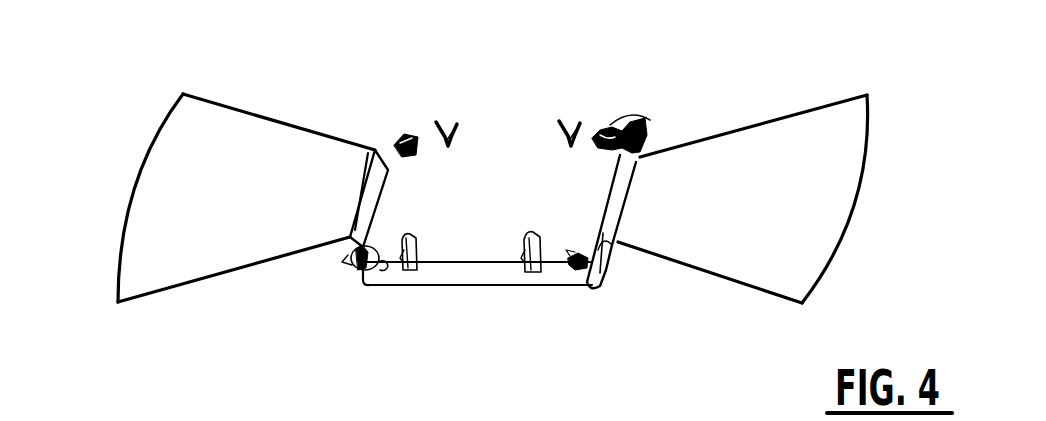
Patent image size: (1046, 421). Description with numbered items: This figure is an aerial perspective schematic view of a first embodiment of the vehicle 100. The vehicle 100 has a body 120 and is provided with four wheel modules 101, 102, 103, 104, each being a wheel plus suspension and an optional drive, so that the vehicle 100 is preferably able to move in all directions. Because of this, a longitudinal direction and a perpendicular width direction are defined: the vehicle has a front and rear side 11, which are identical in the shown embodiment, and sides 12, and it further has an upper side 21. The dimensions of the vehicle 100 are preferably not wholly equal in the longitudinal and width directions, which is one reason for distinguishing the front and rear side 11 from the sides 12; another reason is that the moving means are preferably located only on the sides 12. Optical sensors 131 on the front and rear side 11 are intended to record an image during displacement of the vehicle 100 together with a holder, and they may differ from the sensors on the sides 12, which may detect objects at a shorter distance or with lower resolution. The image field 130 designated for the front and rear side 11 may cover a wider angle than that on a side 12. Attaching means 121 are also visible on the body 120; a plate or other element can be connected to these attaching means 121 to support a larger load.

The vehicle 100 is at (777, 93).
The image field 130 is at (828, 189).
The optical sensors 131 is at (355, 193).
The front and rear side 11 is at (610, 267).
The upper side 21 is at (573, 197).
The sides 12 is at (425, 288).
The body 120 is at (475, 235).
The attaching means 121 is at (567, 128).
The wheel module 101 is at (362, 270).
The wheel module 102 is at (620, 125).
The wheel module 103 is at (577, 270).
The wheel module 104 is at (398, 135).